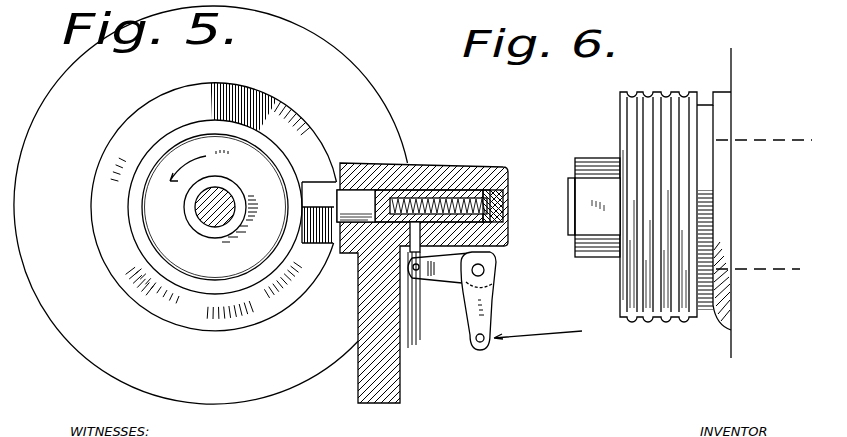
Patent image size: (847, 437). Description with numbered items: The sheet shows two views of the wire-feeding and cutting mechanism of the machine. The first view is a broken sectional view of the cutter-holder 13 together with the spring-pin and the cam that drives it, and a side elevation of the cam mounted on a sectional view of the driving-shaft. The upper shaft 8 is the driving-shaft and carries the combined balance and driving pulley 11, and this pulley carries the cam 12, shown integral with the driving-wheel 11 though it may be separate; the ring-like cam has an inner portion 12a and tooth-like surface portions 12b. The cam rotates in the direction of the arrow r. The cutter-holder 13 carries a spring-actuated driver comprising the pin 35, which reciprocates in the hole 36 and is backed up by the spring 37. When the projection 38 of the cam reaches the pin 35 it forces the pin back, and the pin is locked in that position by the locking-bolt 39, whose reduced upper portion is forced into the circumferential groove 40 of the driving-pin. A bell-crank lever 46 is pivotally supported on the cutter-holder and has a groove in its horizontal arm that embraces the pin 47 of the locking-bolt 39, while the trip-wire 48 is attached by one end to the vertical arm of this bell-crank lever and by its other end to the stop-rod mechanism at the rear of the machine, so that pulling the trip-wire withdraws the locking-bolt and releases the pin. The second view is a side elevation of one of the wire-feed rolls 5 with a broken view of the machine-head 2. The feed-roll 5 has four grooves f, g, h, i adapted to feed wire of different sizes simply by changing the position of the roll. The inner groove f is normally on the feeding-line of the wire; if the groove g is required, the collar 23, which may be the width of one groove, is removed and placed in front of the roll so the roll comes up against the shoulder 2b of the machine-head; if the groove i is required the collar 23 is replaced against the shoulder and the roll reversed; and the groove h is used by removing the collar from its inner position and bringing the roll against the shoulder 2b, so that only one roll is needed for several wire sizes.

In FIG. 5, the combined balance and driving pulley 11 is at (347, 63).
In FIG. 5, the cam 12 is at (156, 96).
In FIG. 5, the inner ring 12a is at (271, 274).
In FIG. 5, the ring teeth 12b is at (140, 117).
In FIG. 5, the upper shaft 8 is at (204, 211).
In FIG. 6, the upper shaft 8 is at (568, 201).
In FIG. 5, the arrow r is at (199, 165).
In FIG. 5, the projection of the cam 38 is at (319, 212).
In FIG. 5, the cutter-holder 13 is at (353, 349).
In FIG. 5, the circumferential groove 40 is at (424, 163).
In FIG. 5, the pin 35 is at (356, 206).
In FIG. 5, the spring 37 is at (445, 190).
In FIG. 5, the hole 36 is at (504, 176).
In FIG. 5, the locking-bolt 39 is at (424, 329).
In FIG. 5, the pin of the locking-bolt 47 is at (439, 268).
In FIG. 5, the bell-crank lever 46 is at (494, 287).
In FIG. 5, the trip-wire 48 is at (539, 326).
In FIG. 6, the wire-feed roll 5 is at (620, 117).
In FIG. 6, the machine-head 2 is at (732, 68).
In FIG. 6, the shoulder of the machine-head 2b is at (713, 92).
In FIG. 6, the collar 23 is at (707, 316).
In FIG. 6, the groove i is at (632, 320).
In FIG. 6, the groove h is at (649, 320).
In FIG. 6, the groove g is at (667, 320).
In FIG. 6, the inner groove f is at (684, 320).